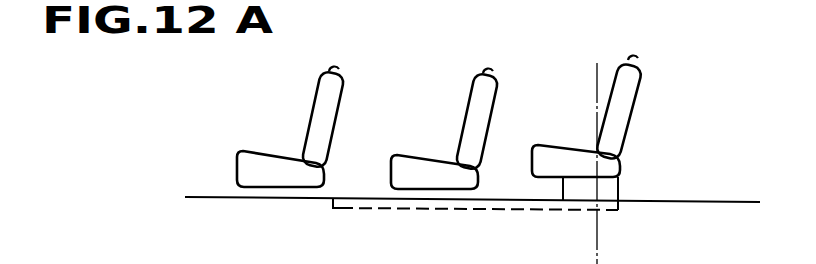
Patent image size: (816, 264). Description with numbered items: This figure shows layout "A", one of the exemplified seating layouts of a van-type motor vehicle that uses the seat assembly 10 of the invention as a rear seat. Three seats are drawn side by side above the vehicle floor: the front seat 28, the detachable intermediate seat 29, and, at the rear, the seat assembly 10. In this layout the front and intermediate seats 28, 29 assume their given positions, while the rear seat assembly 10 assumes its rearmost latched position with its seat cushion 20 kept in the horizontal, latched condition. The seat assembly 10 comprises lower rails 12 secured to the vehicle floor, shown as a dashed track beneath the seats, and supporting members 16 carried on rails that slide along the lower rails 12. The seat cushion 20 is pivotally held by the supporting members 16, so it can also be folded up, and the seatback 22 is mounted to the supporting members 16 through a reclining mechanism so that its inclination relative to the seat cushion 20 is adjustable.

The seat assembly 10 is at (608, 123).
The lower rails 12 is at (453, 207).
The supporting members 16 is at (618, 186).
The seat cushion 20 is at (543, 152).
The seatback 22 is at (638, 81).
The front seat 28 is at (293, 143).
The intermediate seat 29 is at (448, 146).